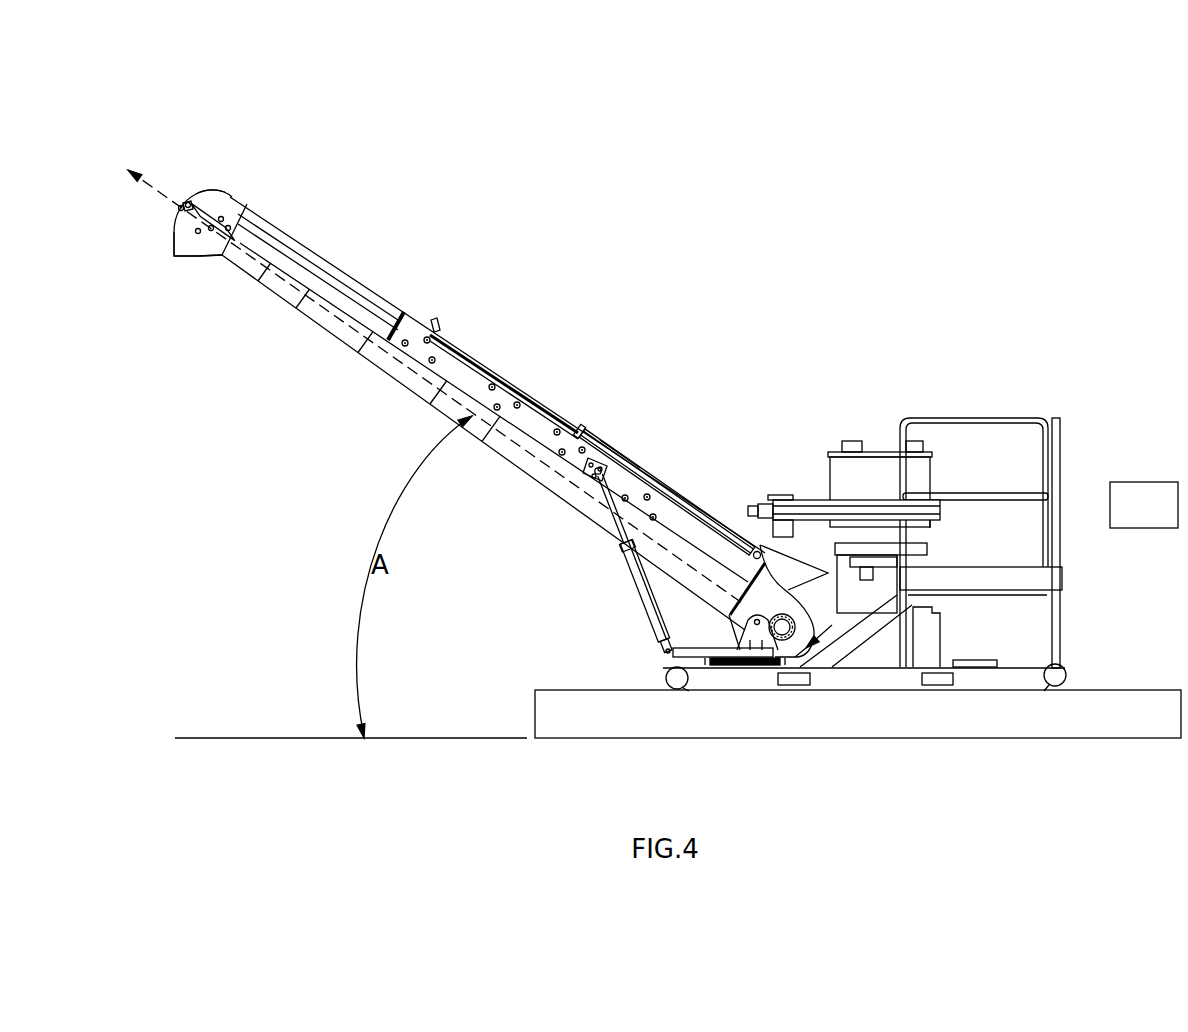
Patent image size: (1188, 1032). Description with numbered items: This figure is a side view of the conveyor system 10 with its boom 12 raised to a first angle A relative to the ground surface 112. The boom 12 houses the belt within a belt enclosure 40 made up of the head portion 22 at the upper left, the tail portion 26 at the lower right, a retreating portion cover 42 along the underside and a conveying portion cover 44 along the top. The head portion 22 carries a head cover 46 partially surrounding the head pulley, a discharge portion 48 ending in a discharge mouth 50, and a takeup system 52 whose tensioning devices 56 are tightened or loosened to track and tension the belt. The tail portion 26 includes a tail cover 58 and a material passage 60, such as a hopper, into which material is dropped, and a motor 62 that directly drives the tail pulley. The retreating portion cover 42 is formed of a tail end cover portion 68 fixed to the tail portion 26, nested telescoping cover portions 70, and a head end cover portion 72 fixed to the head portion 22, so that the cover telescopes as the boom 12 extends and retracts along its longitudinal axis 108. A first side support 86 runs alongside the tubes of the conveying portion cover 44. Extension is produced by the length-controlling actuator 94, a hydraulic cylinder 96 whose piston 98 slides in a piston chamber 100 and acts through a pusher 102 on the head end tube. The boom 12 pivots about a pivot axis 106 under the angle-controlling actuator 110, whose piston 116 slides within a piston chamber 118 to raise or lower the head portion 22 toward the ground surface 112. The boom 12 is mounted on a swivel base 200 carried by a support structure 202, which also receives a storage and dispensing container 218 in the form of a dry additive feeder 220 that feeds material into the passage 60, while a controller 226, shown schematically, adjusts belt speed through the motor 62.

The conveyor system 10 is at (680, 300).
The boom 12 is at (380, 300).
The head portion 22 is at (217, 196).
The tail portion 26 is at (801, 622).
The belt enclosure 40 is at (427, 412).
The retreating portion cover 42 is at (500, 462).
The conveying portion cover 44 is at (305, 250).
The head cover 46 is at (223, 198).
The discharge portion 48 is at (188, 240).
The discharge mouth 50 is at (181, 258).
The takeup system 52 is at (235, 195).
The tensioning devices 56 is at (188, 208).
The tail cover 58 is at (658, 645).
The material passage 60 is at (797, 578).
The motor 62 is at (783, 640).
The tail end cover portion 68 is at (593, 507).
The telescoping cover portions 70 is at (300, 314).
The head end cover portion 72 is at (227, 258).
The first side support 86 is at (535, 417).
The length-controlling actuator 94 is at (600, 437).
The hydraulic cylinder 96 is at (628, 458).
The piston 98 is at (490, 362).
The piston chamber 100 is at (663, 483).
The pusher 102 is at (430, 320).
The pivot axis 106 is at (757, 620).
The longitudinal axis 108 is at (160, 185).
The angle-controlling actuator 110 is at (650, 615).
The ground surface 112 is at (237, 738).
The piston 116 is at (586, 492).
The piston chamber 118 is at (633, 578).
The swivel base 200 is at (742, 630).
The support structure 202 is at (1082, 443).
The storage and dispensing container 218 is at (867, 473).
The dry additive feeder 220 is at (832, 497).
The controller 226 is at (1161, 518).